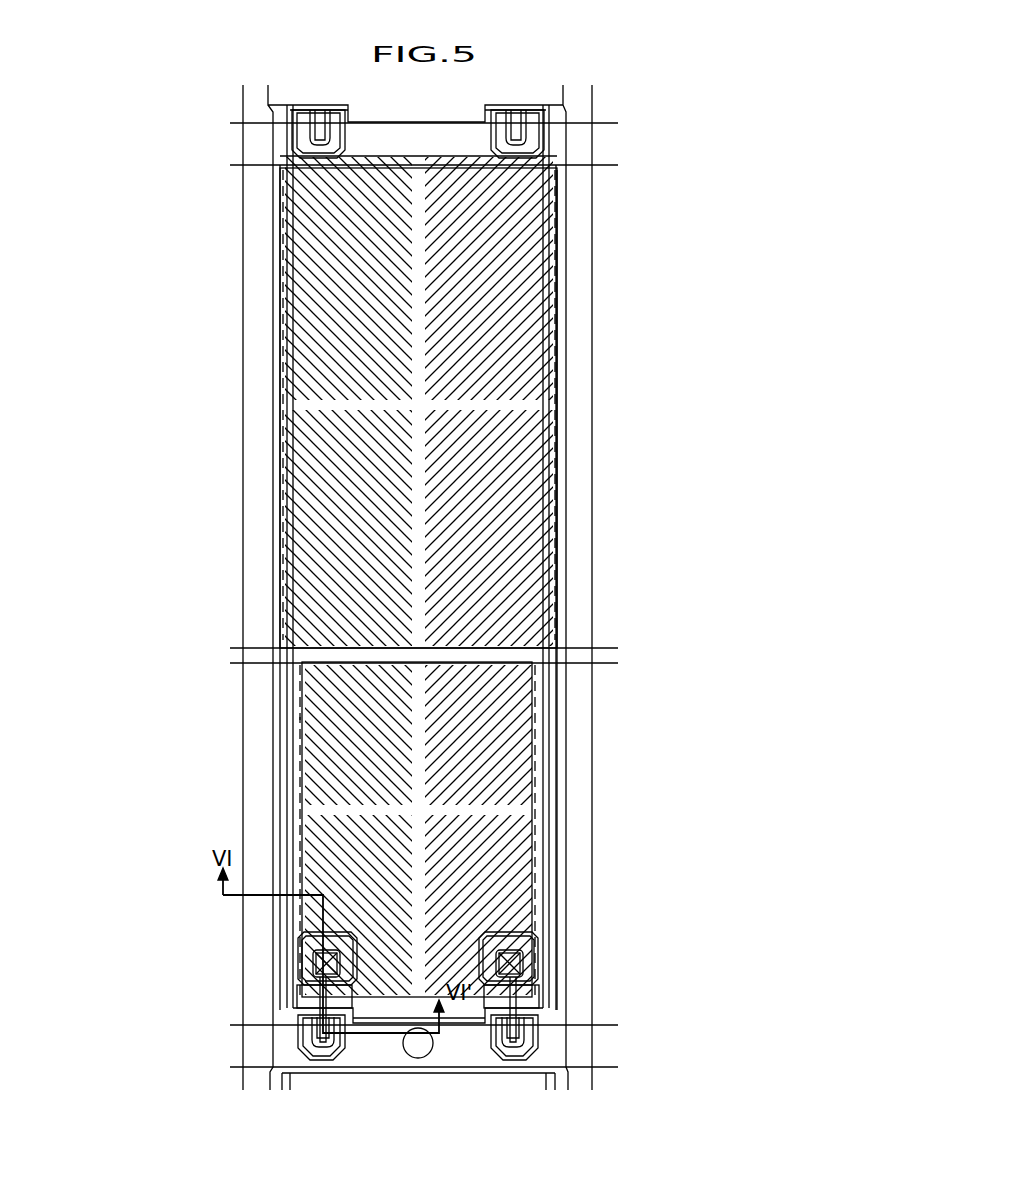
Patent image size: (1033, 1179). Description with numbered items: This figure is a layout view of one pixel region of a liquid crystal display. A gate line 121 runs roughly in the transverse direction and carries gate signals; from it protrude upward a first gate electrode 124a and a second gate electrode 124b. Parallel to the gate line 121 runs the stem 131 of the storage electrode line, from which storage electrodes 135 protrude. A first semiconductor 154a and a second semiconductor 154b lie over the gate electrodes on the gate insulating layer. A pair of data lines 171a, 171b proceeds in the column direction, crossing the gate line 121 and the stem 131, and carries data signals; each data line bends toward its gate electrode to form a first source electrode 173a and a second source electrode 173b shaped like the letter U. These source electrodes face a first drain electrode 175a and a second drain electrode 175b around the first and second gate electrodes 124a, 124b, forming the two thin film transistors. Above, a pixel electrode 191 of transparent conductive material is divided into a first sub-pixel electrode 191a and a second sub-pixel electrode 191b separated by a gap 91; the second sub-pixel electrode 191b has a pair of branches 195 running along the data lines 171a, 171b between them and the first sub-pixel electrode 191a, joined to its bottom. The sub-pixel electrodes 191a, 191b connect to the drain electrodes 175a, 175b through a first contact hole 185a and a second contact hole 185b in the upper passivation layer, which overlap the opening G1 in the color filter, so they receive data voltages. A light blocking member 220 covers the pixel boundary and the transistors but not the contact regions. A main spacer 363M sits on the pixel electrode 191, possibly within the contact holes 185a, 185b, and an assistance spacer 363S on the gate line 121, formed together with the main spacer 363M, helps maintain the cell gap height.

The light blocking member 220 is at (276, 238).
The pixel electrode 191 is at (526, 576).
The first sub-pixel electrode 191a is at (525, 733).
The second sub-pixel electrode 191b is at (558, 388).
The stem 131 is at (593, 647).
The storage electrode 135 is at (292, 682).
The gap 91 is at (300, 717).
The branch 195 is at (559, 796).
The first data line 171a is at (553, 850).
The second data line 171b is at (288, 828).
The first drain electrode 175a is at (510, 998).
The second drain electrode 175b is at (305, 934).
The main spacer 363M is at (298, 945).
The assistance spacer 363S is at (420, 1058).
The first contact hole 185a is at (527, 952).
The second contact hole 185b is at (312, 964).
The opening G1 is at (300, 980).
The gate line 121 is at (604, 1025).
The first semiconductor 154a is at (532, 1062).
The second semiconductor 154b is at (302, 1062).
The first gate electrode 124a is at (470, 1023).
The second gate electrode 124b is at (365, 1008).
The first source electrode 173a is at (495, 1043).
The second source electrode 173b is at (345, 1037).